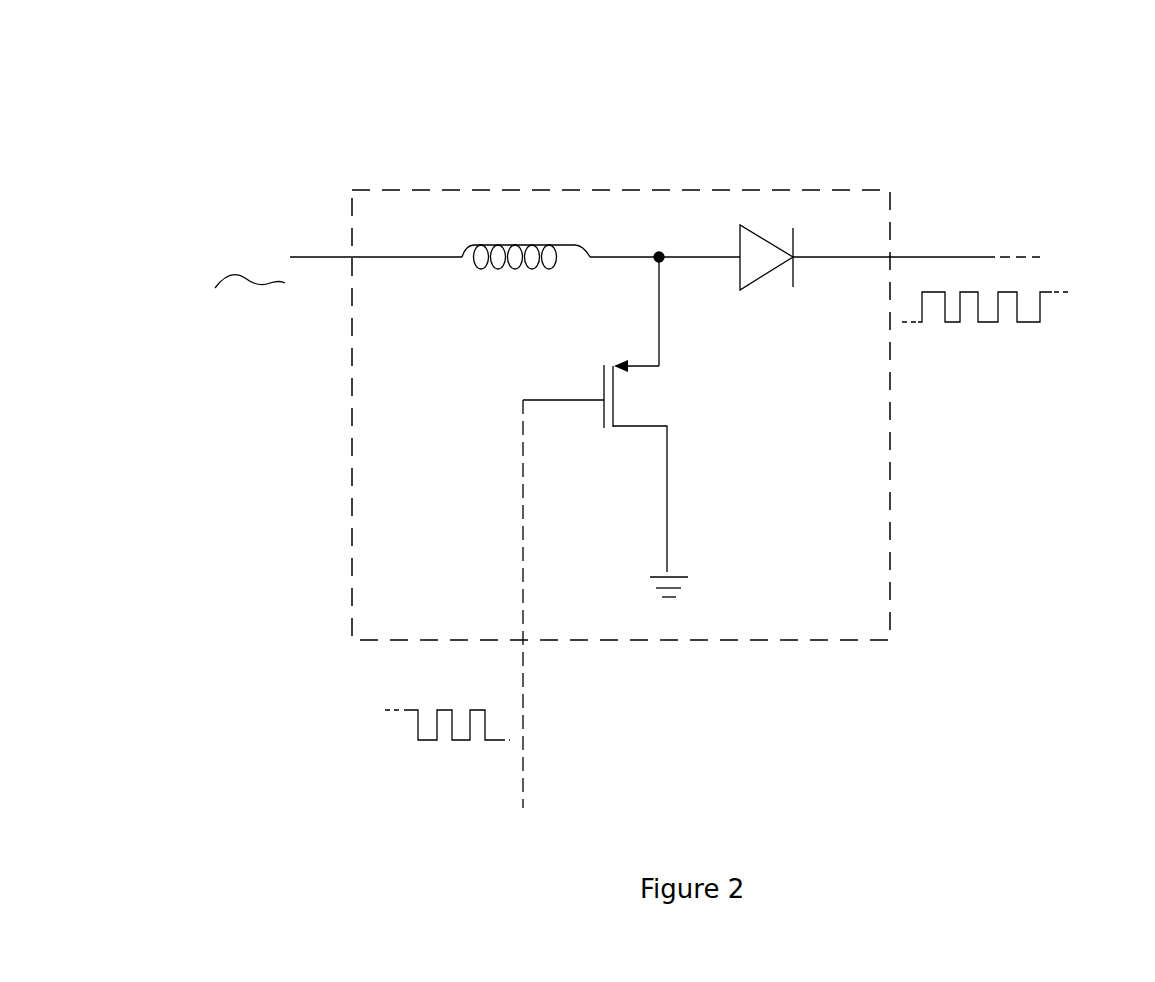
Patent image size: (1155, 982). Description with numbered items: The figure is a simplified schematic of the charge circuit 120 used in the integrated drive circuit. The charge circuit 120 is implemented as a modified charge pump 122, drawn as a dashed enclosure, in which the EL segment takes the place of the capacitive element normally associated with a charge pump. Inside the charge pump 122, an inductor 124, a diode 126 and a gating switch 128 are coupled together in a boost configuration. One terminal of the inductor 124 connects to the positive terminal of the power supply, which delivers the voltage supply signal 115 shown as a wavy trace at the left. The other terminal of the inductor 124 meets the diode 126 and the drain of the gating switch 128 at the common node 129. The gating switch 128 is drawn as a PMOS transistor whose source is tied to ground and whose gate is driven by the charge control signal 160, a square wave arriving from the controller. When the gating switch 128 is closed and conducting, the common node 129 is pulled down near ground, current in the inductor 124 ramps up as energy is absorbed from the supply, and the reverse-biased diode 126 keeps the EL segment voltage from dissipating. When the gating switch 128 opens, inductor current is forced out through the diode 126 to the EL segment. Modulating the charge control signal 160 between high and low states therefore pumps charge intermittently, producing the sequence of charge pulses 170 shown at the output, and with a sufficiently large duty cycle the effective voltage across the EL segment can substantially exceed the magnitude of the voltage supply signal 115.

The charge circuit 120 is at (274, 80).
The charge pump 122 is at (352, 367).
The voltage supply signal 115 is at (253, 290).
The inductor 124 is at (525, 232).
The diode 126 is at (765, 226).
The gating switch 128 is at (670, 381).
The common node 129 is at (668, 262).
The charge control signal 160 is at (457, 742).
The sequence of charge pulses 170 is at (979, 325).